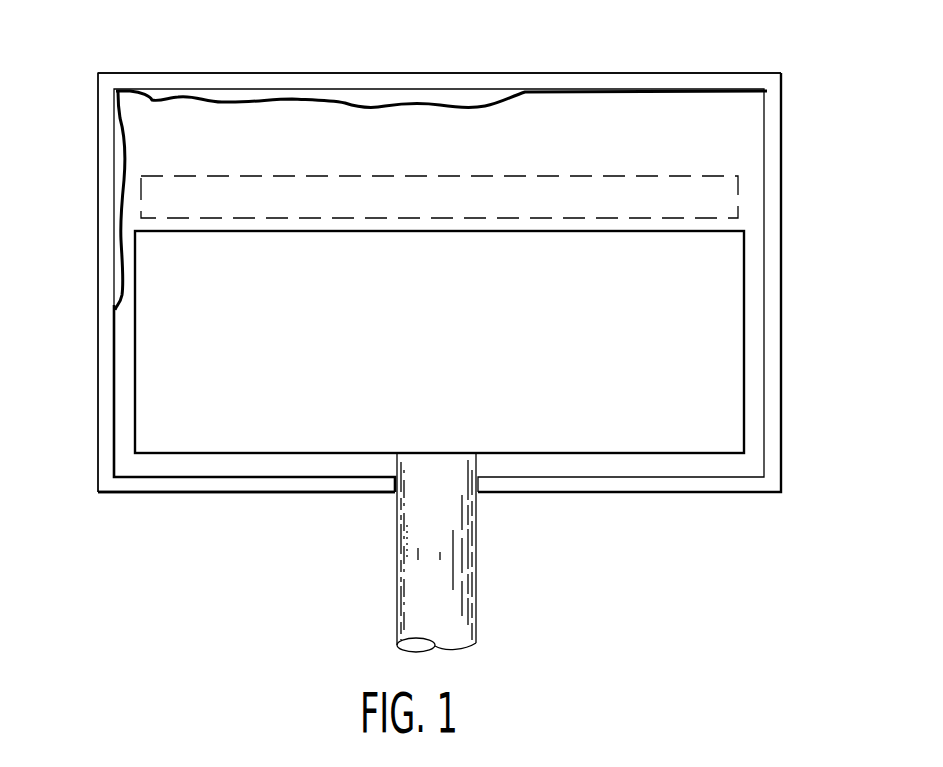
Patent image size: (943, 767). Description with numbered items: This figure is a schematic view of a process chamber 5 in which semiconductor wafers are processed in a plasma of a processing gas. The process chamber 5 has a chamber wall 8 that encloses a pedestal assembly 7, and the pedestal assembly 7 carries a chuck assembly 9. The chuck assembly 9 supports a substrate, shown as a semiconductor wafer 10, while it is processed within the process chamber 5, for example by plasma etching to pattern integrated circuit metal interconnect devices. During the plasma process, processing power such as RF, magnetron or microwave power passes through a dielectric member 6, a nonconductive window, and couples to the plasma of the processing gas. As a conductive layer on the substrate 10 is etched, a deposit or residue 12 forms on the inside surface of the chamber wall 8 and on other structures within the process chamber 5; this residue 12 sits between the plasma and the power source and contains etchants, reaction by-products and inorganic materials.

The process chamber 5 is at (92, 177).
The dielectric member 6 is at (367, 80).
The pedestal assembly 7 is at (410, 565).
The chamber wall 8 is at (108, 240).
The chuck assembly 9 is at (178, 465).
The semiconductor wafer 10 is at (746, 165).
The residue 12 is at (123, 145).